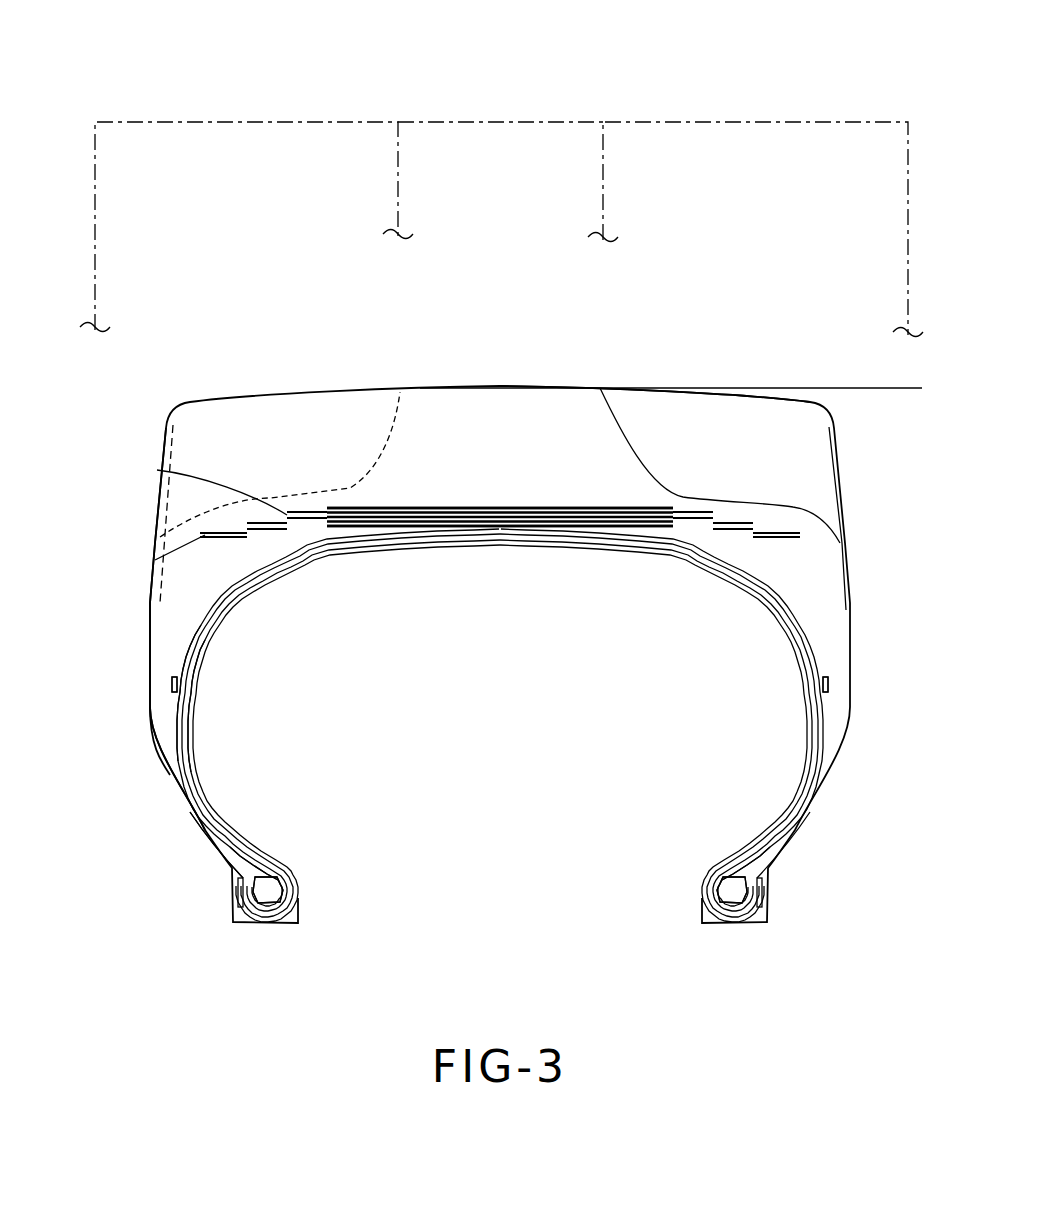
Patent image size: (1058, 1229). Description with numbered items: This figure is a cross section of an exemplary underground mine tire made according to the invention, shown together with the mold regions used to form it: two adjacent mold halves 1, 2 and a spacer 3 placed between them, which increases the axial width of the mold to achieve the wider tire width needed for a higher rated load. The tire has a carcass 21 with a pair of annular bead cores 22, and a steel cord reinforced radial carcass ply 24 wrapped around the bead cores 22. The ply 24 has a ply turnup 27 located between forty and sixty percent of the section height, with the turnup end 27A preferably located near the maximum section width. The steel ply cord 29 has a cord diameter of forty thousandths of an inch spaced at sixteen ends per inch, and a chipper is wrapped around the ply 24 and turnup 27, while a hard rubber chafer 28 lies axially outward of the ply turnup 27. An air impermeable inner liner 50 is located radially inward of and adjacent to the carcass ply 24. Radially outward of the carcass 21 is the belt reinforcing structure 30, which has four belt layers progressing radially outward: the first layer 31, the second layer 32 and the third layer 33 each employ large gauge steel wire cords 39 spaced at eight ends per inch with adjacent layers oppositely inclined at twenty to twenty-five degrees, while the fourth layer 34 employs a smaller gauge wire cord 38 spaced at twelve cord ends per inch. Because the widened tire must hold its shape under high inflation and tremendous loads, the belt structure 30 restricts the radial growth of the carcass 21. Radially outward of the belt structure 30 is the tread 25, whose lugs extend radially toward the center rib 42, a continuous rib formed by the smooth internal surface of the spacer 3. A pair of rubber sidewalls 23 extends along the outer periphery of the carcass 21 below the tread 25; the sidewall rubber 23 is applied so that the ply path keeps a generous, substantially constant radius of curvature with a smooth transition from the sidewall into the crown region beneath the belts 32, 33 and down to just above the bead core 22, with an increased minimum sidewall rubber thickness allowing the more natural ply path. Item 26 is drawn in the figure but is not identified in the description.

The mold half 1 is at (248, 118).
The mold half 2 is at (753, 118).
The spacer 3 is at (501, 118).
The carcass 21 is at (222, 787).
The bead cores 22 is at (258, 891).
The sidewalls 23 is at (148, 630).
The carcass ply 24 is at (190, 676).
The tread 25 is at (567, 425).
The apex 26 is at (255, 862).
The ply turnup 27 is at (168, 724).
The turnup end 27A is at (175, 682).
The chafer 28 is at (212, 843).
The steel ply cord 29 is at (252, 693).
The belt reinforcing structure 30 is at (512, 523).
The first layer 31 is at (329, 525).
The second layer 32 is at (345, 522).
The third layer 33 is at (188, 485).
The fourth layer 34 is at (415, 510).
The wire cord 38 is at (500, 396).
The steel wire cords 39 is at (250, 424).
The center rib 42 is at (590, 482).
The inner liner 50 is at (192, 732).